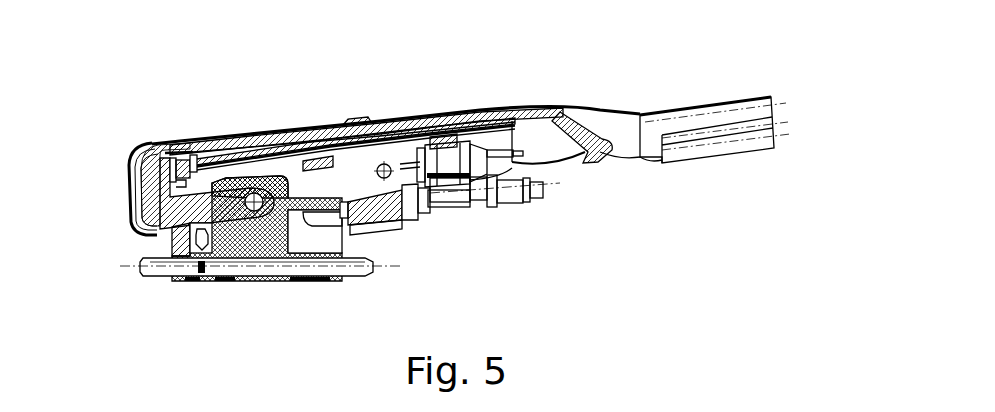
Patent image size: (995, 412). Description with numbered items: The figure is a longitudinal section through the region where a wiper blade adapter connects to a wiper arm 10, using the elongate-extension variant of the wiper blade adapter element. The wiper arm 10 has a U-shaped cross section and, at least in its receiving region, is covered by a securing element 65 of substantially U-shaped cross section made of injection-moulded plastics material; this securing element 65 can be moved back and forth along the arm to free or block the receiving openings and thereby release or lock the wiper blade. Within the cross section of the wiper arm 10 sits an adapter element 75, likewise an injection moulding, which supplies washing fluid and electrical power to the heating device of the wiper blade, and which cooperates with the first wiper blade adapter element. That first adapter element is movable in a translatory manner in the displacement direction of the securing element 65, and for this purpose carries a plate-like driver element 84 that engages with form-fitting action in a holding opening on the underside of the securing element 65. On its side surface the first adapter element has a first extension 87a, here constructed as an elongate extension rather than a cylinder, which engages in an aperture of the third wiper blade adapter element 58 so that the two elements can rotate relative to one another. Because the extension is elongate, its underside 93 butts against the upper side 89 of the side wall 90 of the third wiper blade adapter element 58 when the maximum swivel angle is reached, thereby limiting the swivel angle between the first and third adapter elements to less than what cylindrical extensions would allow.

The wiper arm 10 is at (703, 125).
The securing element 65 is at (323, 130).
The first extension 87a is at (225, 203).
The underside of the first extension 93 is at (200, 220).
The driver element 84 is at (158, 184).
The upper side of the side wall 89 is at (185, 248).
The side wall 90 is at (258, 230).
The third wiper blade adapter element 58 is at (268, 280).
The adapter element 75 is at (448, 198).